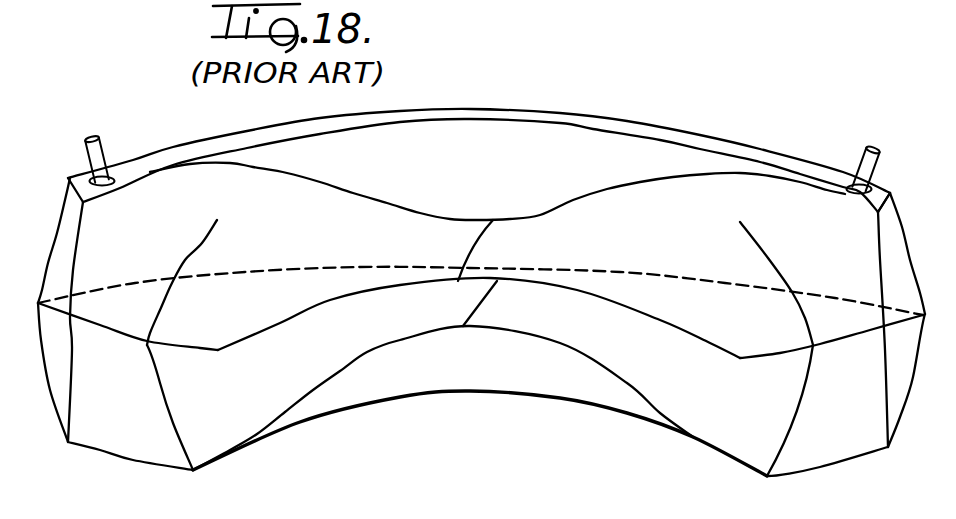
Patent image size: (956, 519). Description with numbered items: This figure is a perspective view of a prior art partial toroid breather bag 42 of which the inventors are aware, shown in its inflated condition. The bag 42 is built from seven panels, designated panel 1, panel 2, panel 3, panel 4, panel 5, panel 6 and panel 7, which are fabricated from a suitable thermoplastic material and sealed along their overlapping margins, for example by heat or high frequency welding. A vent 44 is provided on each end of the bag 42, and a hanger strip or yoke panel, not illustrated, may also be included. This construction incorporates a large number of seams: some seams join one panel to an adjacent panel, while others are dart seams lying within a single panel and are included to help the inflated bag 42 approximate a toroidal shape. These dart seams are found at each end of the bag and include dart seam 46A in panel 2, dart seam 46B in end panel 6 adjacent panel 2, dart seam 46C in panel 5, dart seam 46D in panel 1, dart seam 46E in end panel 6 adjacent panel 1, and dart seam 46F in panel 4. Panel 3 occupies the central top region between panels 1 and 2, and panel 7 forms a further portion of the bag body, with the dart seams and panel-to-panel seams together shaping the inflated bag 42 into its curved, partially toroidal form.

The breather bag 42 is at (577, 101).
The vent 44 is at (94, 158).
The dart seam 46A is at (768, 256).
The dart seam 46B is at (878, 202).
The dart seam 46C is at (796, 405).
The dart seam 46D is at (189, 254).
The dart seam 46E is at (92, 192).
The dart seam 46F is at (166, 394).
The panel 1 is at (347, 241).
The panel 2 is at (660, 244).
The panel 3 is at (513, 187).
The panel 4 is at (201, 440).
The panel 5 is at (803, 450).
The panel 6 is at (65, 227).
The panel 7 is at (64, 386).